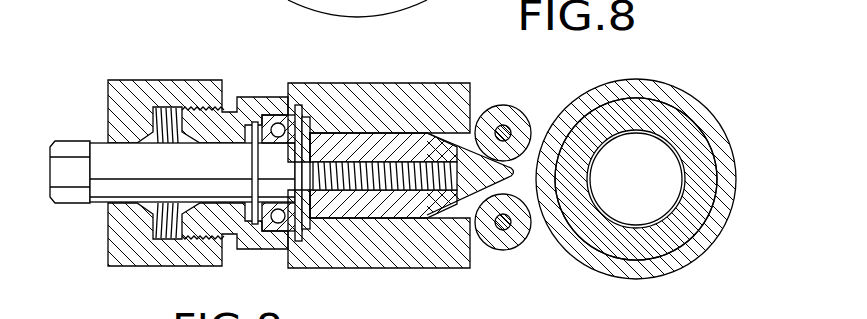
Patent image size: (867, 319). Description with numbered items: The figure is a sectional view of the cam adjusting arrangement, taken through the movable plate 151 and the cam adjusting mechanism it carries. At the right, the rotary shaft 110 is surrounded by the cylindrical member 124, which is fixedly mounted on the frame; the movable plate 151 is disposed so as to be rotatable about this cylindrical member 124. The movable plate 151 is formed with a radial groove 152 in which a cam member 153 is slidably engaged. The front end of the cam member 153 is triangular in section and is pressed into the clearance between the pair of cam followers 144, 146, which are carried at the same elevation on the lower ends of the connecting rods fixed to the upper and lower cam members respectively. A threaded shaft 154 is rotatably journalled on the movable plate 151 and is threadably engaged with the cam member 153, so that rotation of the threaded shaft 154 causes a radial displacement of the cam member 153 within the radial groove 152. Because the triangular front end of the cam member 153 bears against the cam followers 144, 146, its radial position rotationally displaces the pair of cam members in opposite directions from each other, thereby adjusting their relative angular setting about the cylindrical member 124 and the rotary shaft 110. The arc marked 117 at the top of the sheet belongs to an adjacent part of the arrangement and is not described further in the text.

The rotary shaft 110 is at (640, 210).
The arc of adjacent member 117 is at (472, 27).
The cylindrical member 124 is at (687, 230).
The cam follower 144 is at (518, 247).
The cam follower 146 is at (520, 110).
The movable plate 151 is at (422, 270).
The radial groove 152 is at (457, 138).
The cam member 153 is at (398, 143).
The threaded shaft 154 is at (225, 163).